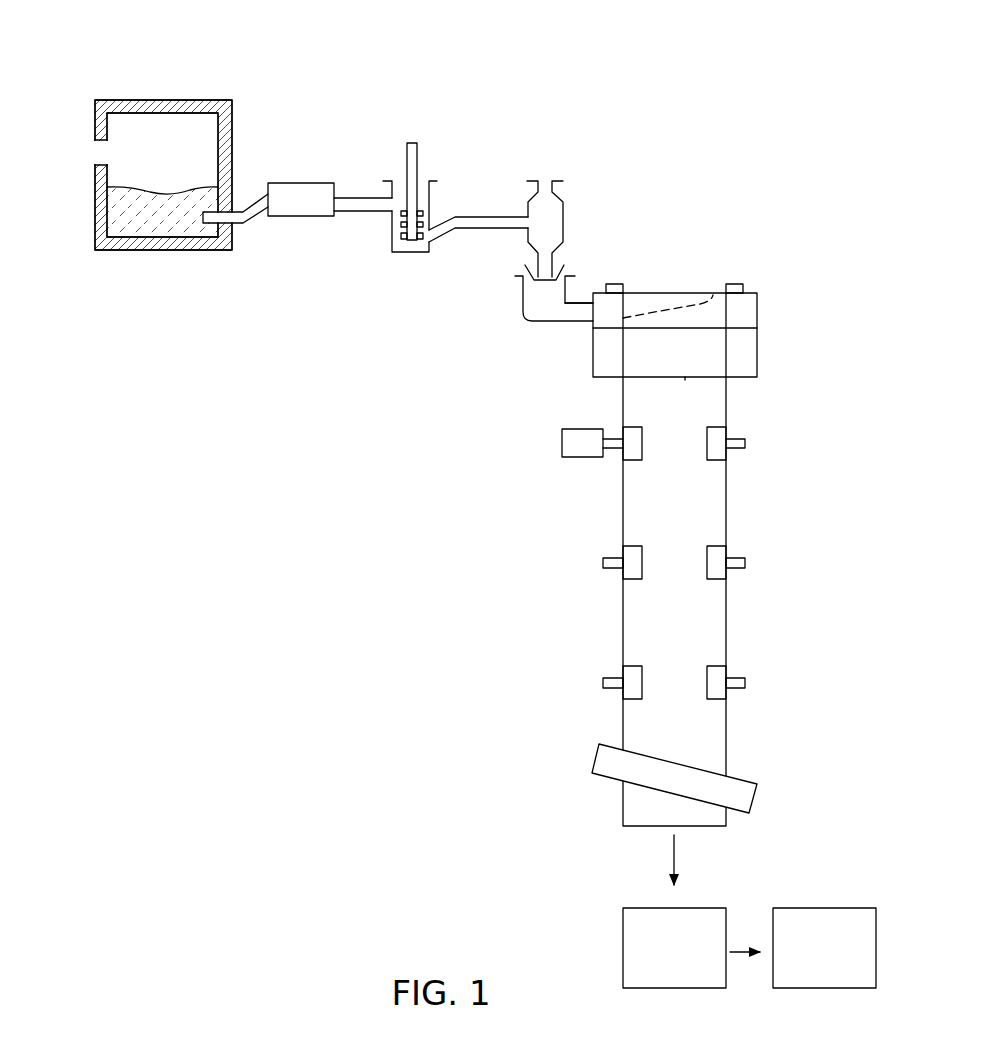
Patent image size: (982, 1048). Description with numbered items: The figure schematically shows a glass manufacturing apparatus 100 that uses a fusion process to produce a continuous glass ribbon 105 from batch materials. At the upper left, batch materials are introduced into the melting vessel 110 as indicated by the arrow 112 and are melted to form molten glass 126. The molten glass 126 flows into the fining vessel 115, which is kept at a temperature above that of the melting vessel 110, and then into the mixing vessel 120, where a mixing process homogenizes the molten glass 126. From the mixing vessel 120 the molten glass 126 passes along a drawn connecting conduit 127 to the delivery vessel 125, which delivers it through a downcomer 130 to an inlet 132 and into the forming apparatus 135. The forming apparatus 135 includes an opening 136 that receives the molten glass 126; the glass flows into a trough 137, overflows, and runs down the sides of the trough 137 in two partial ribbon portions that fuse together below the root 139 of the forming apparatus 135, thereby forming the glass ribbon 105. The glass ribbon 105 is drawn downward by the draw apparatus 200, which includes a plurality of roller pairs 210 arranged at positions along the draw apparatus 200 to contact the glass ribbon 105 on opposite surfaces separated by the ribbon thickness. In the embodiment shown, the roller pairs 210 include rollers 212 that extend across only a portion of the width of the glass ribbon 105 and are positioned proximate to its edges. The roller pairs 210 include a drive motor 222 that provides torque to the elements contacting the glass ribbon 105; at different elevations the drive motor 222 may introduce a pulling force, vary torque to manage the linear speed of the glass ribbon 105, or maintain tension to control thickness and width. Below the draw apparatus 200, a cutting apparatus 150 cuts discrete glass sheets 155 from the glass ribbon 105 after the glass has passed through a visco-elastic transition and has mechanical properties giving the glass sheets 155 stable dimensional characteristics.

The glass manufacturing apparatus 100 is at (684, 48).
The glass ribbon 105 is at (727, 742).
The melting vessel 110 is at (152, 150).
The arrow 112 is at (112, 154).
The fining vessel 115 is at (303, 183).
The mixing vessel 120 is at (438, 196).
The delivery vessel 125 is at (563, 203).
The molten glass 126 is at (160, 193).
The conduit 127 is at (483, 230).
The downcomer 130 is at (553, 259).
The inlet 132 is at (532, 322).
The forming apparatus 135 is at (725, 326).
The opening 136 is at (590, 322).
The trough 137 is at (683, 293).
The root 139 is at (685, 377).
The cutting apparatus 150 is at (592, 767).
The glass sheets 155 is at (656, 963).
The draw apparatus 200 is at (676, 530).
The roller pairs 210 is at (654, 537).
The rollers 212 is at (632, 460).
The drive motor 222 is at (572, 457).